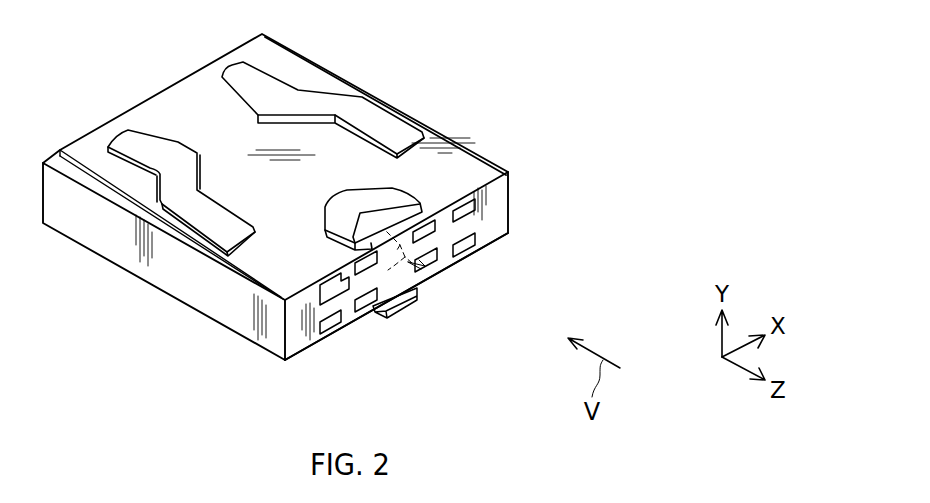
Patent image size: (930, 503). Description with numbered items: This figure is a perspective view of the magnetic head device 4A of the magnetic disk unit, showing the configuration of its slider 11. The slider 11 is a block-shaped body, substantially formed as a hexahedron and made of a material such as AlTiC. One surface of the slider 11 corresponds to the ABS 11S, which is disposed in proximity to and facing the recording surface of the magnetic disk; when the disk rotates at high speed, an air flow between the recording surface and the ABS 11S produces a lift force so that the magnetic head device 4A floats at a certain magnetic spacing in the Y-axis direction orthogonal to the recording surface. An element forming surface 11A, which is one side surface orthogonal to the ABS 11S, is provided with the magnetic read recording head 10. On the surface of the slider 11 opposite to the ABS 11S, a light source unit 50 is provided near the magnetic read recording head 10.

The magnetic head device 4A is at (336, 212).
The slider 11 is at (498, 200).
The ABS 11S is at (203, 220).
The element forming surface 11A is at (308, 346).
The light source unit 50 is at (407, 310).
The magnetic read recording head 10 is at (412, 263).